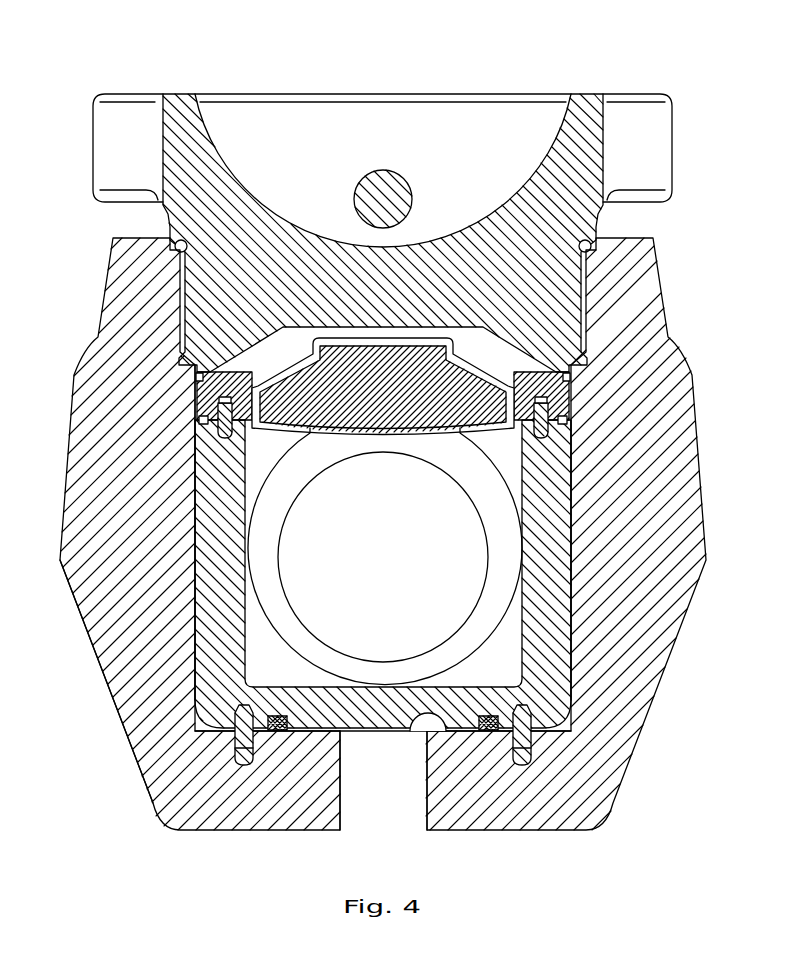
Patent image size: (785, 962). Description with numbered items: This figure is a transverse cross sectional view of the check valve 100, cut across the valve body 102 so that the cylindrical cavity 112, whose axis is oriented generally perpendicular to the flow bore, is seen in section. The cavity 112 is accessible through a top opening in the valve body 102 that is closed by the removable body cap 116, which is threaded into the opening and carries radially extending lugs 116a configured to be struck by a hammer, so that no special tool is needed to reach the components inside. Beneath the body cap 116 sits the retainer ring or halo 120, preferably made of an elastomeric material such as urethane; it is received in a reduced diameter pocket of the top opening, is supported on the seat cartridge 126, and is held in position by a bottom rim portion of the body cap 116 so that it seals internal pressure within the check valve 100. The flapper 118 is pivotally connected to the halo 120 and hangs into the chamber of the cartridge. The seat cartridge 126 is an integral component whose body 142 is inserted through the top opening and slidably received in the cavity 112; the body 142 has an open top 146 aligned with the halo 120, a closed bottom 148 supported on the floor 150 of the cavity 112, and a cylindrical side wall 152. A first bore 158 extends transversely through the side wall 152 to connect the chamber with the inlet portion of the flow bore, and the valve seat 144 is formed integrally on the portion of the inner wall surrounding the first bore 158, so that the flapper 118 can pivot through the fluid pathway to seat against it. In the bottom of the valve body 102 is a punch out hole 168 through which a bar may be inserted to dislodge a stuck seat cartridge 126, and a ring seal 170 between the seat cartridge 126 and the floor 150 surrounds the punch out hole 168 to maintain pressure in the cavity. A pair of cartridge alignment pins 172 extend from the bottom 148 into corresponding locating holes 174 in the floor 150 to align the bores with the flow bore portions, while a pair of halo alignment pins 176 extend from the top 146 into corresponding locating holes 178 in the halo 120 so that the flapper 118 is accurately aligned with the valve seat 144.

The check valve 100 is at (704, 79).
The valve body 102 is at (652, 702).
The cavity 112 is at (578, 660).
The body cap 116 is at (600, 208).
The radially extending lugs 116a is at (658, 151).
The flapper 118 is at (401, 396).
The retainer ring or halo 120 is at (556, 406).
The seat cartridge 126 is at (166, 688).
The body 142 is at (184, 628).
The valve seat 144 is at (505, 568).
The open top 146 is at (197, 414).
The closed bottom 148 is at (320, 733).
The floor 150 is at (410, 732).
The cylindrical side wall 152 is at (572, 542).
The first bore 158 is at (313, 634).
The punch out hole 168 is at (412, 823).
The ring seal 170 is at (283, 731).
The cartridge alignment pins 172 is at (234, 740).
The locating holes 174 is at (237, 757).
The halo alignment pins 176 is at (217, 427).
The locating holes 178 is at (197, 397).